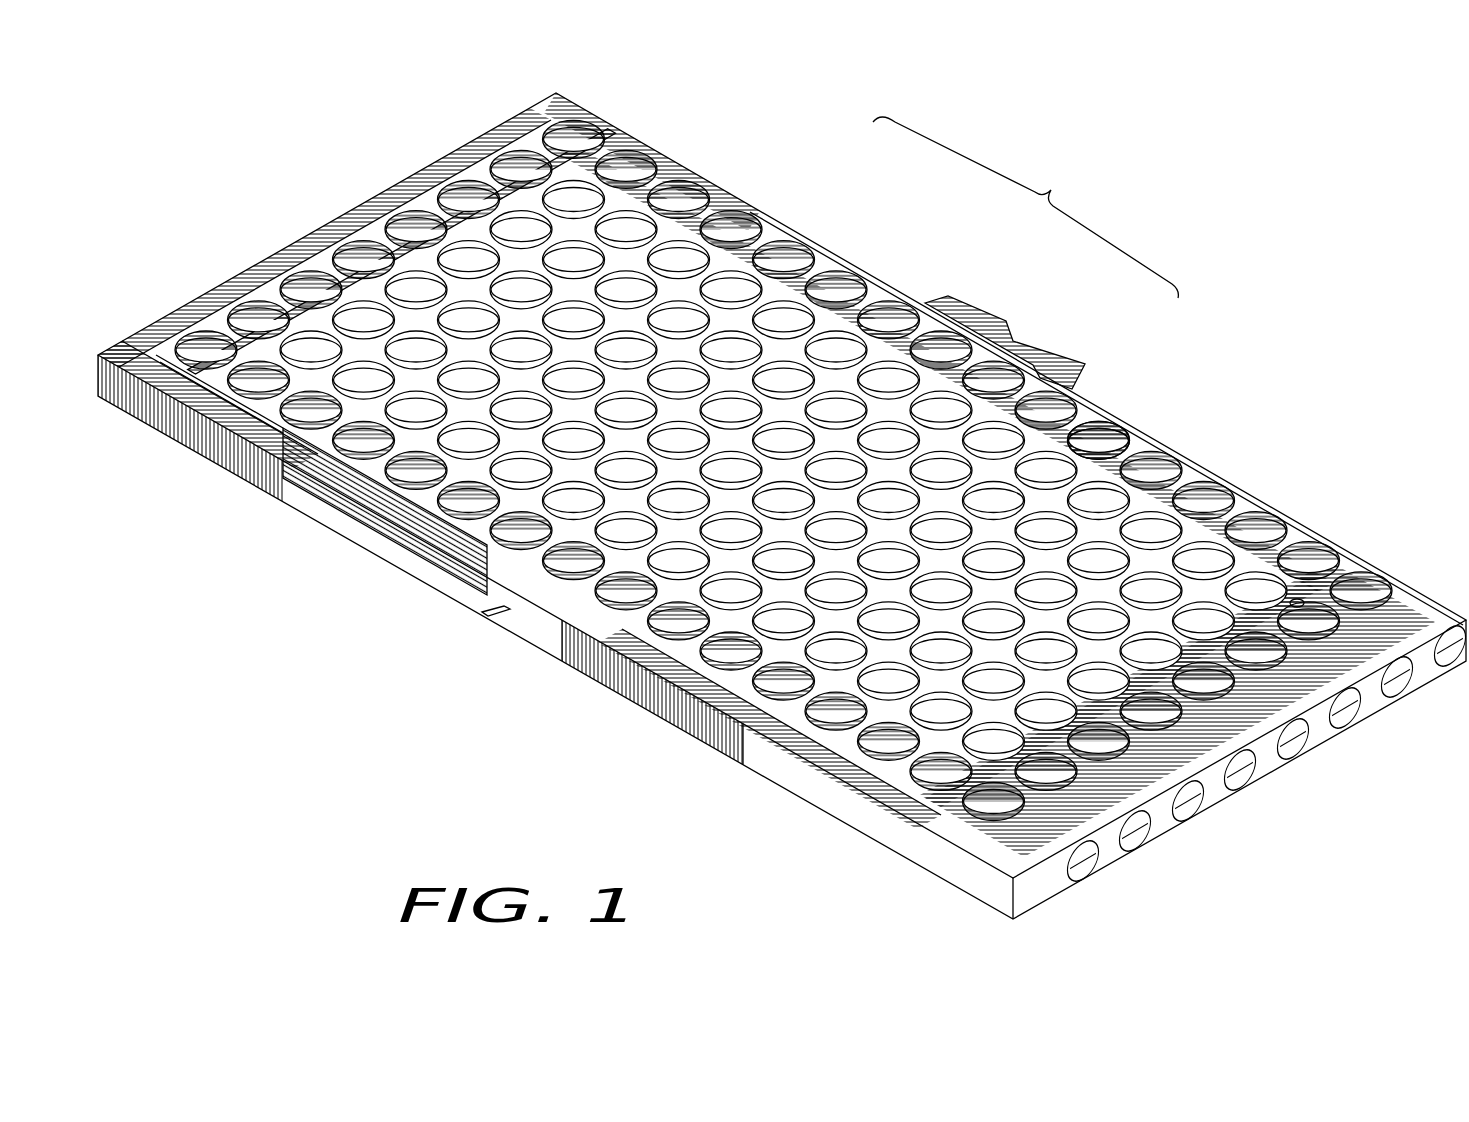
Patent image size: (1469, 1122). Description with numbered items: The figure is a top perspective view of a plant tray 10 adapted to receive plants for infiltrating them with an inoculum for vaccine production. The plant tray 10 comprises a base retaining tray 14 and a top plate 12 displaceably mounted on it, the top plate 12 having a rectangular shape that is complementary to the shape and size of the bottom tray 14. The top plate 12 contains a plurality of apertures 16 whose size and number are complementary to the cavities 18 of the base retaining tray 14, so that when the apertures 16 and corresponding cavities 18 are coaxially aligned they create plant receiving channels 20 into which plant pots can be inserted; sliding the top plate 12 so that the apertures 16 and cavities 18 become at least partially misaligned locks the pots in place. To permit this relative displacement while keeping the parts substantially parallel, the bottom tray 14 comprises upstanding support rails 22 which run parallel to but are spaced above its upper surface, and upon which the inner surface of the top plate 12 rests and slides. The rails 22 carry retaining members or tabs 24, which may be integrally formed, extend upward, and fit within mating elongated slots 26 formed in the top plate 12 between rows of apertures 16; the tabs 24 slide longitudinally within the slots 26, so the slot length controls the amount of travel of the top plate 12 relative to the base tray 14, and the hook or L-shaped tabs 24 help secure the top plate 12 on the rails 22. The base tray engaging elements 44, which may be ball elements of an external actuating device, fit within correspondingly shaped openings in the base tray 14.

The plant tray 10 is at (782, 474).
The top plate 12 is at (1240, 472).
The base retaining tray 14 is at (472, 132).
The apertures 16 is at (760, 213).
The cavities 18 is at (1005, 376).
The plant receiving channels 20 is at (1025, 207).
The support rails 22 is at (722, 690).
The retaining members or tabs 24 is at (1104, 452).
The slots 26 is at (1300, 594).
The base tray engaging elements 44 is at (492, 614).